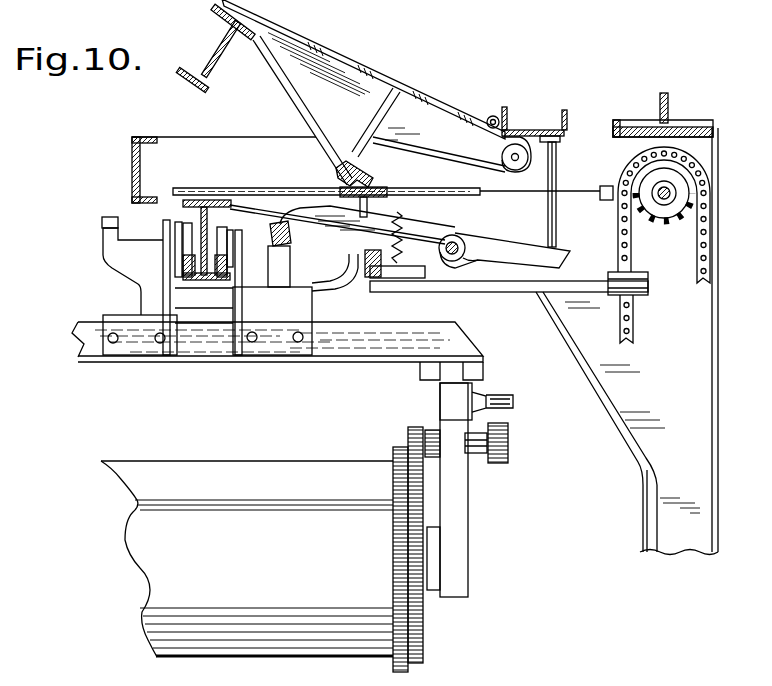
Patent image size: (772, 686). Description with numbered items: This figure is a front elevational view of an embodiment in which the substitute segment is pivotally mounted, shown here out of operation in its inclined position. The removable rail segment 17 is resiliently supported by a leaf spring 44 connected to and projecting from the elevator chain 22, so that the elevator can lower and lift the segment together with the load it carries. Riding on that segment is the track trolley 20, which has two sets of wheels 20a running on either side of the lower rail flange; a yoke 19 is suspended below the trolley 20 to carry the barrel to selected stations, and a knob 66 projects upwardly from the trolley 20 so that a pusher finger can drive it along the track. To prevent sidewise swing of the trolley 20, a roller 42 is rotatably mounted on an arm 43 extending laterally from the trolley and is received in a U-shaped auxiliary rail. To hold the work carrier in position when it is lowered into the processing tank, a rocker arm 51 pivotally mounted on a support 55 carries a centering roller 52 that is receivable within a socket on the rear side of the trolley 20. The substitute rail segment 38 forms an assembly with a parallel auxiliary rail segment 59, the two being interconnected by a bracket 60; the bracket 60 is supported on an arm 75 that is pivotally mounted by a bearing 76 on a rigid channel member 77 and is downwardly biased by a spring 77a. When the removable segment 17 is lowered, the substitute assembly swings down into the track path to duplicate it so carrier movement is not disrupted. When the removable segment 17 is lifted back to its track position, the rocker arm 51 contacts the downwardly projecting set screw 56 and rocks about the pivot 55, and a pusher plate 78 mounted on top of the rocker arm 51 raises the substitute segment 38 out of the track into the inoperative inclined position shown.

The substitute rail segment 38 is at (215, 53).
The bracket 60 is at (289, 98).
The arm 75 is at (391, 90).
The spring 77a is at (491, 117).
The rigid channel member 77 is at (523, 128).
The bearing 76 is at (530, 158).
The auxiliary rail segment 59 is at (340, 163).
The pusher plate 78 is at (368, 192).
The rocker arm 51 is at (417, 225).
The support 55 is at (458, 242).
The set screw 56 is at (557, 212).
The knob 66 is at (102, 219).
The removable rail segment 17 is at (200, 213).
The roller 52 is at (290, 237).
The trolley 20 is at (110, 272).
The arm 43 is at (333, 288).
The roller 42 is at (377, 290).
The leaf spring 44 is at (497, 292).
The wheels 20a is at (217, 283).
The yoke 19 is at (375, 347).
The elevator chain 22 is at (624, 328).